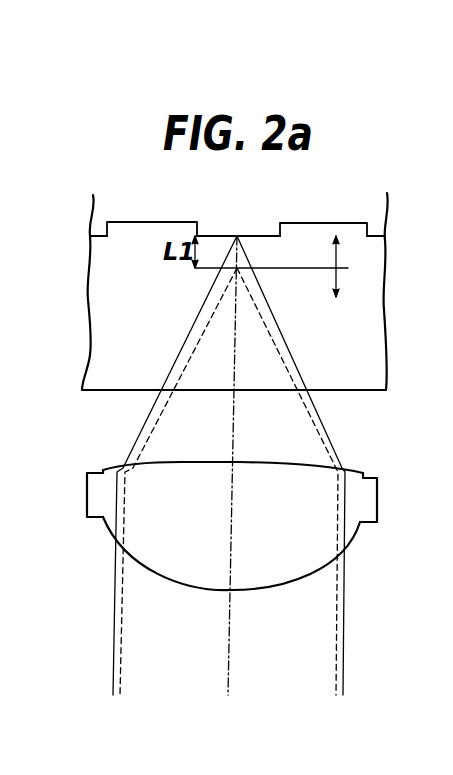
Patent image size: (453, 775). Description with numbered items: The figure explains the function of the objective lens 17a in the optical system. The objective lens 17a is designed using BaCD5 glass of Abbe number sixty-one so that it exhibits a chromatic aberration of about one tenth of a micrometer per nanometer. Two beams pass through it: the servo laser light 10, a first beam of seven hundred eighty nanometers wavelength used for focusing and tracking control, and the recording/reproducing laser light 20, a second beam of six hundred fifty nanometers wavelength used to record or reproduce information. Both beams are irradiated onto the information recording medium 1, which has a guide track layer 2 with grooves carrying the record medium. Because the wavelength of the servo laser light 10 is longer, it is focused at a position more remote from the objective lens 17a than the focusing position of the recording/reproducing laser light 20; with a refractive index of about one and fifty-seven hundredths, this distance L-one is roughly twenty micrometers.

The information recording medium 1 is at (84, 350).
The guide track layer 2 is at (112, 228).
The servo laser light 10 is at (255, 507).
The objective lens 17a is at (359, 494).
The recording/reproducing laser light 20 is at (120, 605).